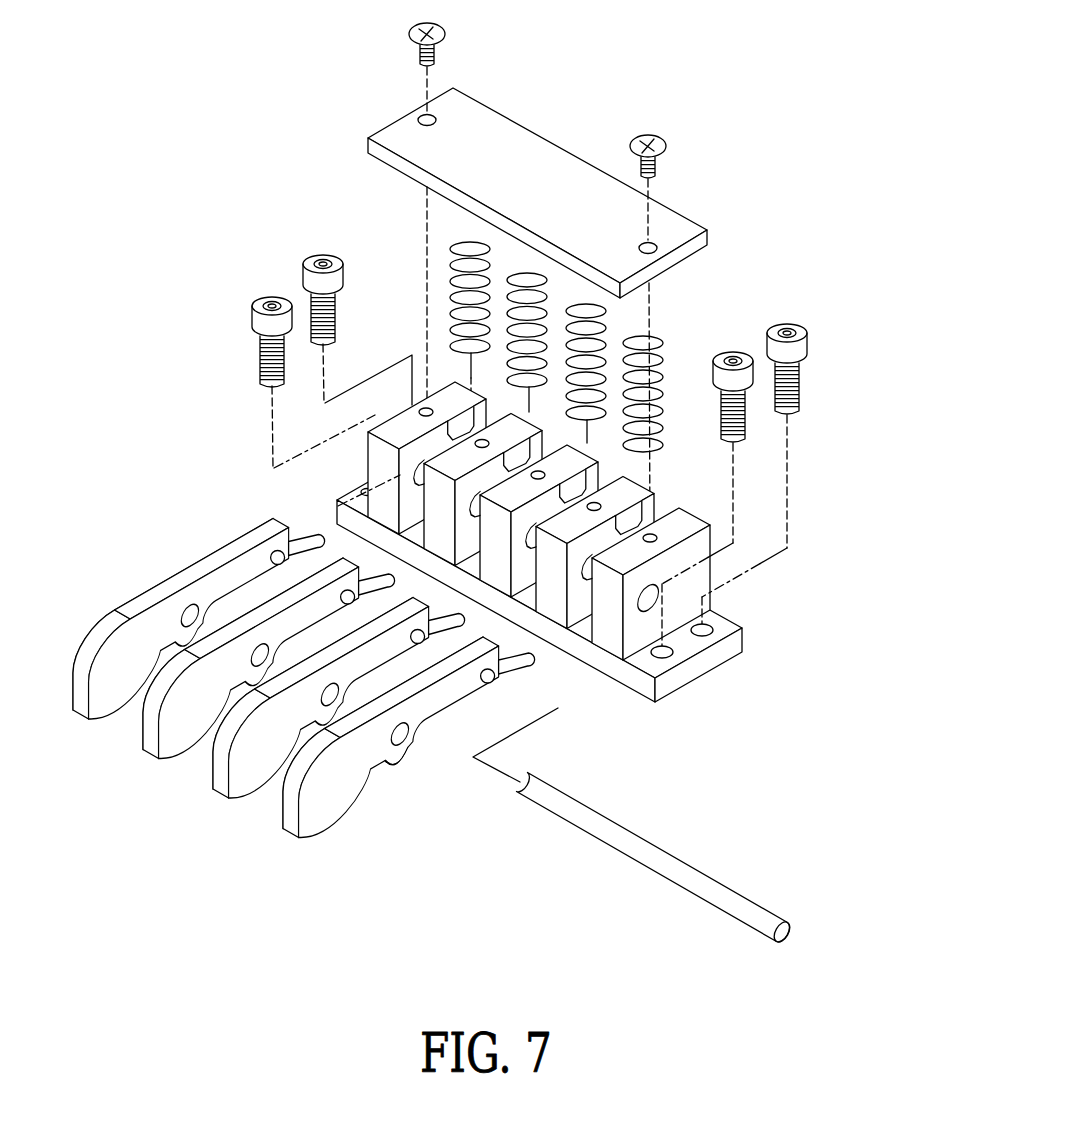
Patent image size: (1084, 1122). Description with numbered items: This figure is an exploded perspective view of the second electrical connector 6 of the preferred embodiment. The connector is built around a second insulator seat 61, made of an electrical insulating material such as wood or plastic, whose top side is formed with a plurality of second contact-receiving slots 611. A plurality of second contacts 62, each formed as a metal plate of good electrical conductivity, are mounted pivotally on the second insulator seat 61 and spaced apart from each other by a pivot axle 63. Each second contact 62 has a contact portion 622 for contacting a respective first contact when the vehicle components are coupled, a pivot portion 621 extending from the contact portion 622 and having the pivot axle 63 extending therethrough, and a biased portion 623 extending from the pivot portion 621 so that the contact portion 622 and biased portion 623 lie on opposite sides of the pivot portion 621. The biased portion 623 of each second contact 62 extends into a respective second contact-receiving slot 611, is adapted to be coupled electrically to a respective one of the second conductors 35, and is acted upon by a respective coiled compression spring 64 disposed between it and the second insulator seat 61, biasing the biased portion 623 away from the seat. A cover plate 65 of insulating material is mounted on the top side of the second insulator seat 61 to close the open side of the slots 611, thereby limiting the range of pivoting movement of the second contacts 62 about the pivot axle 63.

The second electrical connector 6 is at (741, 212).
The second insulator seat 61 is at (632, 636).
The second contact-receiving slots 611 is at (413, 513).
The second contacts 62 is at (100, 720).
The pivot portion 621 is at (400, 764).
The contact portion 622 is at (313, 827).
The biased portion 623 is at (460, 695).
The pivot axle 63 is at (630, 863).
The coiled compression springs 64 is at (520, 268).
The cover plate 65 is at (502, 157).
The second conductors 35 is at (298, 542).